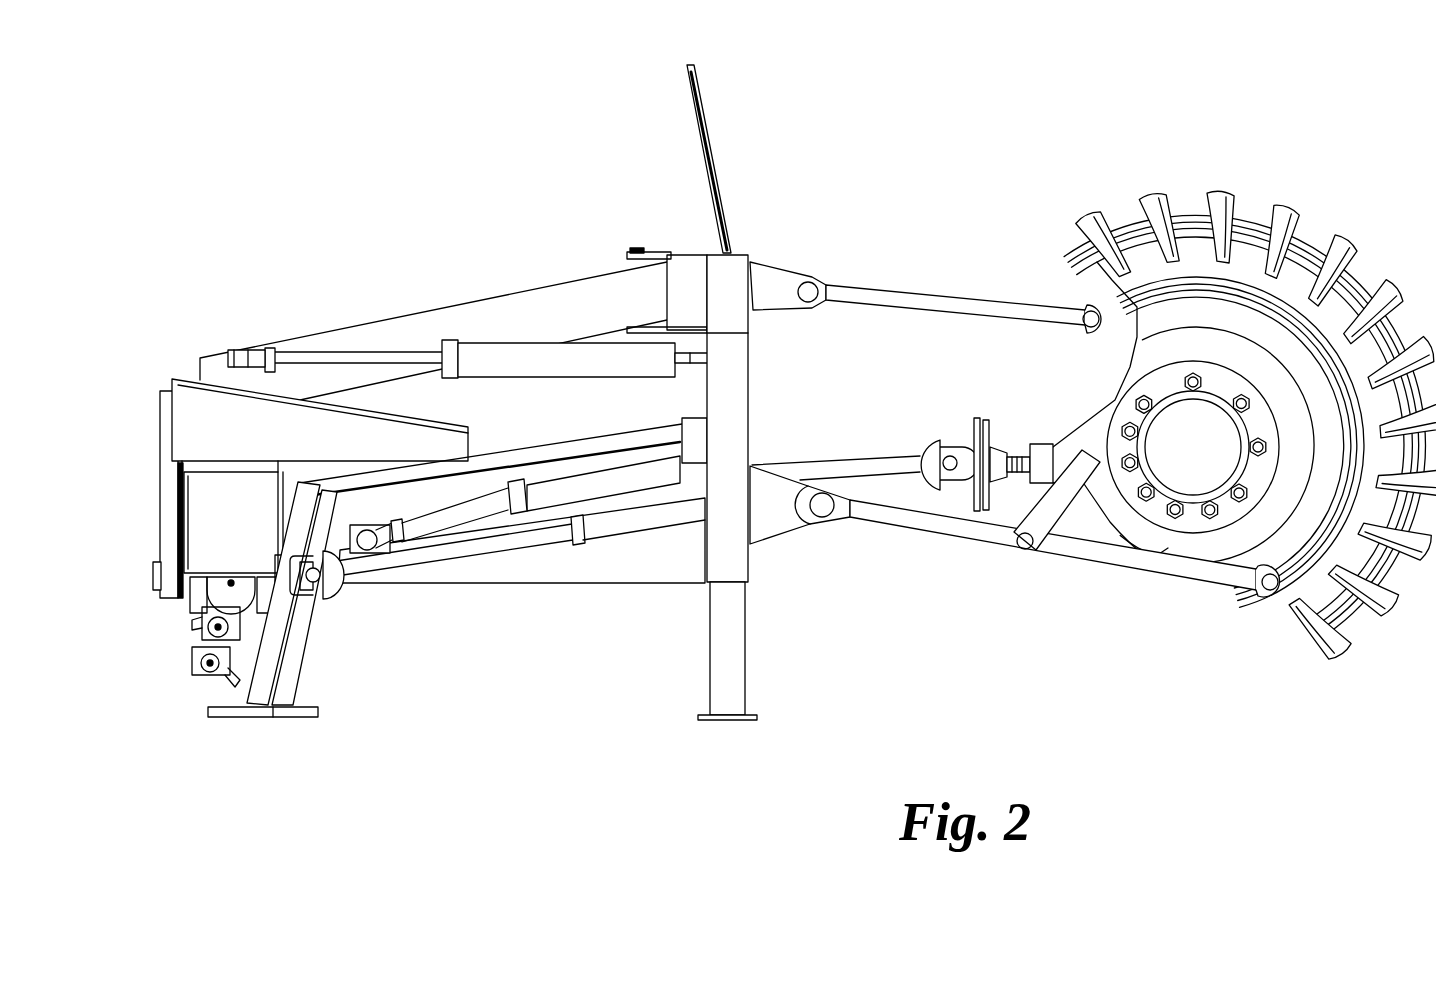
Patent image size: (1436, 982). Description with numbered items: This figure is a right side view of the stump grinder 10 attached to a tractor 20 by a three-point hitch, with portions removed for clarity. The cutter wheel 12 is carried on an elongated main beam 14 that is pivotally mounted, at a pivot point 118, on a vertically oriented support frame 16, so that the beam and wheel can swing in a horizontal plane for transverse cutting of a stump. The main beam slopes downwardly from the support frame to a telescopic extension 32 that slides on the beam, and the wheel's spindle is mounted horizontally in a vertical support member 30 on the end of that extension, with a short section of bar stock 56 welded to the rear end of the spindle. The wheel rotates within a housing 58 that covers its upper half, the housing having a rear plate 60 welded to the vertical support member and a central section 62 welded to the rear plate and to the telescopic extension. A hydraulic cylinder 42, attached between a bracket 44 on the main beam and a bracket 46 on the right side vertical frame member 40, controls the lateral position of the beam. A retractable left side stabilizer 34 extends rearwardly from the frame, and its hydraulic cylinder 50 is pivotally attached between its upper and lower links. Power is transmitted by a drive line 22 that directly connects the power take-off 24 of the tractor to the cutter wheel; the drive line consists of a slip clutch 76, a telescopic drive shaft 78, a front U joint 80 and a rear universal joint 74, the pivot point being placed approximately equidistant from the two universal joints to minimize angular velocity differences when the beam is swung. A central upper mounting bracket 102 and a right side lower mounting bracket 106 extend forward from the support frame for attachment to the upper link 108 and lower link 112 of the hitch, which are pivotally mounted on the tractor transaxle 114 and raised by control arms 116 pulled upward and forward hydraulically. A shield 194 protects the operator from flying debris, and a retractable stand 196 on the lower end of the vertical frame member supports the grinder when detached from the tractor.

The stump grinder 10 is at (800, 105).
The cutter wheel 12 is at (168, 627).
The main beam 14 is at (430, 306).
The support frame 16 is at (740, 245).
The tractor 20 is at (1150, 148).
The drive line 22 is at (690, 540).
The power take-off 24 is at (1020, 450).
The vertical support member 30 is at (158, 438).
The telescopic extension 32 is at (182, 358).
The left side stabilizer 34 is at (552, 428).
The right side vertical frame member 40 is at (752, 386).
The hydraulic cylinder 42 is at (542, 343).
The bracket 44 is at (232, 352).
The bracket 46 is at (750, 362).
The hydraulic cylinder 50 is at (520, 512).
The bar stock 56 is at (155, 578).
The housing 58 is at (172, 478).
The rear plate 60 is at (180, 520).
The central section 62 is at (186, 545).
The rear universal joint 74 is at (343, 596).
The slip clutch 76 is at (950, 440).
The telescopic drive shaft 78 is at (588, 545).
The front U joint 80 is at (918, 450).
The central upper mounting bracket 102 is at (760, 262).
The right side lower mounting bracket 106 is at (797, 536).
The upper link 108 is at (940, 298).
The lower link 112 is at (978, 548).
The tractor transaxle 114 is at (1070, 392).
The control arms 116 is at (1068, 520).
The pivot point 118 is at (650, 248).
The shield 194 is at (688, 68).
The retractable stand 196 is at (752, 690).